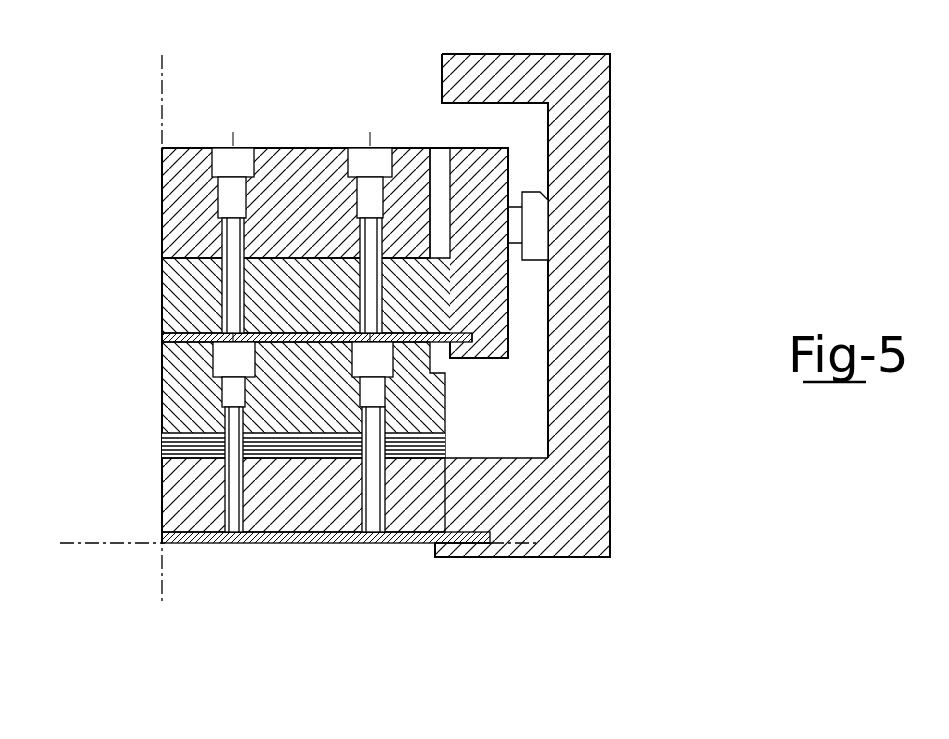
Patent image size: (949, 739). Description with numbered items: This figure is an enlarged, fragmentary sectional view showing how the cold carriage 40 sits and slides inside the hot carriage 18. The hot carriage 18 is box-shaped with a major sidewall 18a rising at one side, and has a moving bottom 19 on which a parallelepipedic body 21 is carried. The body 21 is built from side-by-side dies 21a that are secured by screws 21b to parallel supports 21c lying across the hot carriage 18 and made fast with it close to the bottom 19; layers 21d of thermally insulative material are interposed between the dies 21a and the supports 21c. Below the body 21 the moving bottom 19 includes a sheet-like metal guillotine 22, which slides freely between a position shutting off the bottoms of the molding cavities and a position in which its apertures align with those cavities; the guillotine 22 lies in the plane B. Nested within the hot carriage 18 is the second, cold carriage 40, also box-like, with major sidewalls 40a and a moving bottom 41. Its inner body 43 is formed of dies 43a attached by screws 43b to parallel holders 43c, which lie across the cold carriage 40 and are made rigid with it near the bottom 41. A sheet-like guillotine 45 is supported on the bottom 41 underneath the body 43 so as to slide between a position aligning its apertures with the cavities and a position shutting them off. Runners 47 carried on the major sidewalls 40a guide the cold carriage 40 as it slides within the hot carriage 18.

The carriage 18 is at (663, 492).
The major sidewalls 18a is at (612, 352).
The moving bottom 19 is at (471, 566).
The parallelepipedic body 21 is at (450, 413).
The dies 21a is at (178, 378).
The screws 21b is at (236, 546).
The supports 21c is at (178, 503).
The laminated layers 21d is at (168, 440).
The guillotine 22 is at (318, 546).
The second carriage 40 is at (308, 126).
The major sidewalls 40a is at (508, 182).
The moving bottom 41 is at (466, 366).
The parallelepipedic inner body 43 is at (264, 140).
The dies 43a is at (165, 250).
The screws 43b is at (372, 222).
The holders 43c is at (180, 290).
The guillotine 45 is at (165, 340).
The runners 47 is at (535, 225).
The plane B is at (105, 546).